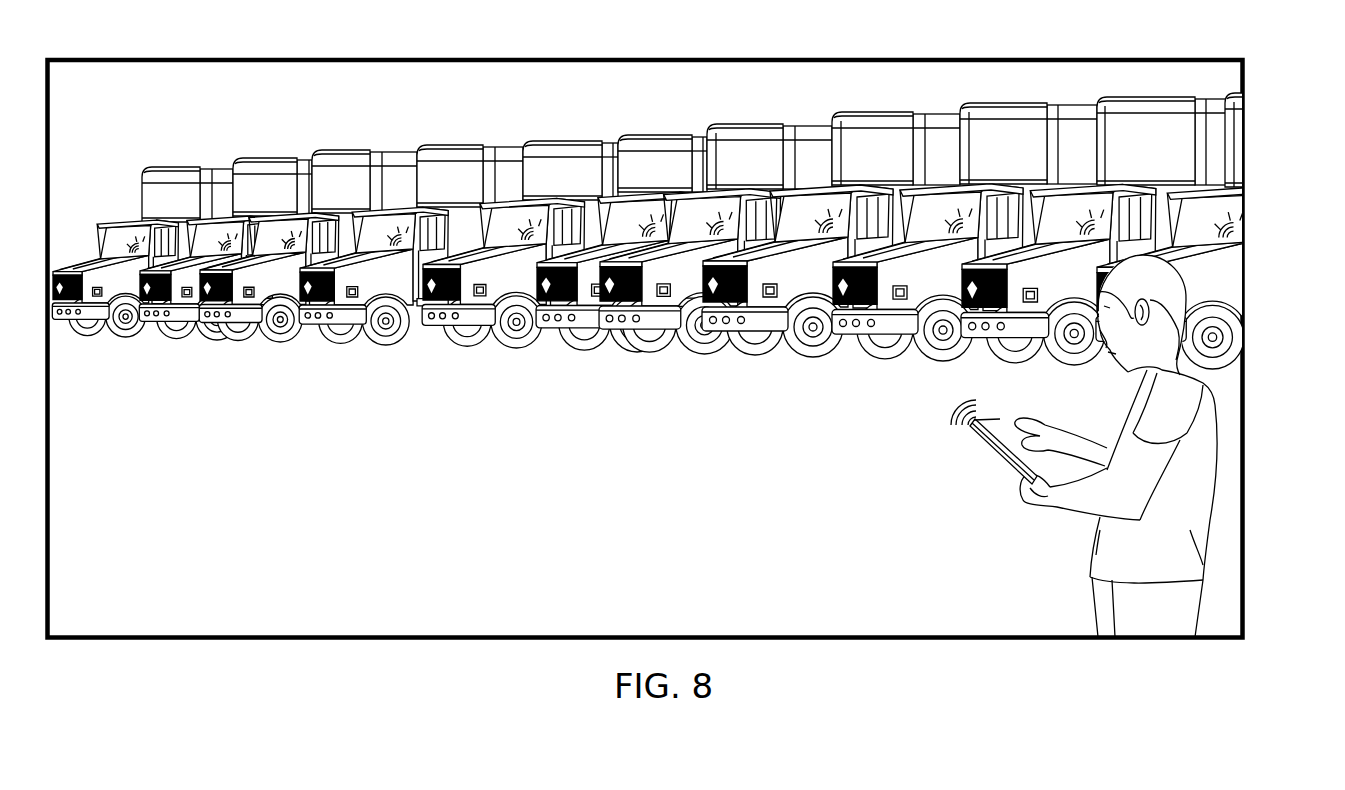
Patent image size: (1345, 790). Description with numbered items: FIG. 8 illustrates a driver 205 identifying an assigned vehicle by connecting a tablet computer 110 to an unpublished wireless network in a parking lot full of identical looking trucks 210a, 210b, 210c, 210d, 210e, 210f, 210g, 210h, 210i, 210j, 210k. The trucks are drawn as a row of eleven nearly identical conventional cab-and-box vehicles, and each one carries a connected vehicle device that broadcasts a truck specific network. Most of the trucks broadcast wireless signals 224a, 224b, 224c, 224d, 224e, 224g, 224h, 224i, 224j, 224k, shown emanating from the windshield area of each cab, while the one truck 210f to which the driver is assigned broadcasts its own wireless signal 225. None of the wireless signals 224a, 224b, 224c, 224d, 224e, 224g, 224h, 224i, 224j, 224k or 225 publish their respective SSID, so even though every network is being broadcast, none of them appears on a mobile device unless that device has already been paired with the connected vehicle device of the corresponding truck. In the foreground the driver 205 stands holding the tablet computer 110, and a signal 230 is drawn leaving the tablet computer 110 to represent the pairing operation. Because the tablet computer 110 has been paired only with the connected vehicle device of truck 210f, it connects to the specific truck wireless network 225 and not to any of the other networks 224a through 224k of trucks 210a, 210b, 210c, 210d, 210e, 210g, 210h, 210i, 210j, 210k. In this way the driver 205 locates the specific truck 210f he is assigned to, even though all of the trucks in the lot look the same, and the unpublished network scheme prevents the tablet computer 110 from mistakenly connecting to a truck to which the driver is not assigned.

The tablet computer 110 is at (1000, 448).
The driver 205 is at (1130, 400).
The truck 210a is at (1096, 217).
The truck 210b is at (964, 220).
The truck 210c is at (831, 219).
The truck 210d is at (715, 222).
The truck 210e is at (639, 225).
The truck 210f is at (530, 230).
The truck 210g is at (412, 230).
The truck 210h is at (312, 232).
The truck 210i is at (231, 233).
The truck 210j is at (144, 238).
The truck 210k is at (1203, 231).
The wireless signal 224a is at (1090, 224).
The wireless signal 224b is at (948, 228).
The wireless signal 224c is at (816, 228).
The wireless signal 224d is at (718, 234).
The wireless signal 224e is at (636, 239).
The wireless signal 224g is at (408, 244).
The wireless signal 224h is at (300, 250).
The wireless signal 224i is at (225, 252).
The wireless signal 224j is at (112, 250).
The wireless signal 224k is at (1240, 233).
The wireless signal 225 is at (520, 244).
The signal 230 is at (952, 415).